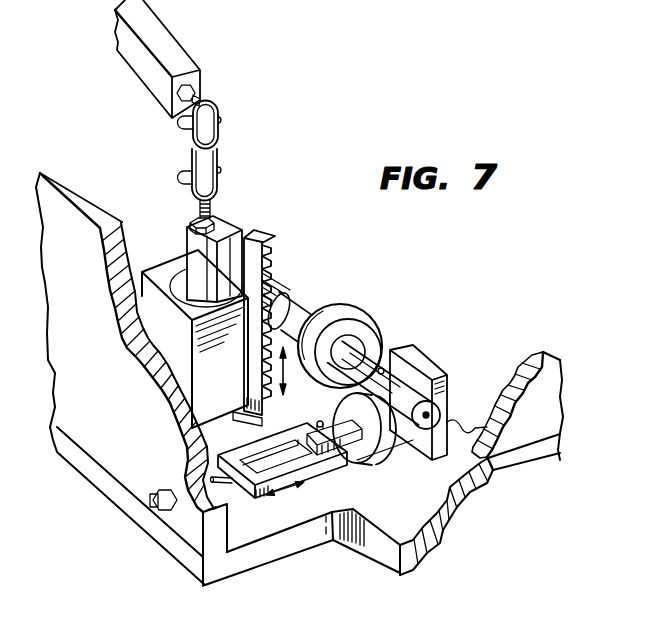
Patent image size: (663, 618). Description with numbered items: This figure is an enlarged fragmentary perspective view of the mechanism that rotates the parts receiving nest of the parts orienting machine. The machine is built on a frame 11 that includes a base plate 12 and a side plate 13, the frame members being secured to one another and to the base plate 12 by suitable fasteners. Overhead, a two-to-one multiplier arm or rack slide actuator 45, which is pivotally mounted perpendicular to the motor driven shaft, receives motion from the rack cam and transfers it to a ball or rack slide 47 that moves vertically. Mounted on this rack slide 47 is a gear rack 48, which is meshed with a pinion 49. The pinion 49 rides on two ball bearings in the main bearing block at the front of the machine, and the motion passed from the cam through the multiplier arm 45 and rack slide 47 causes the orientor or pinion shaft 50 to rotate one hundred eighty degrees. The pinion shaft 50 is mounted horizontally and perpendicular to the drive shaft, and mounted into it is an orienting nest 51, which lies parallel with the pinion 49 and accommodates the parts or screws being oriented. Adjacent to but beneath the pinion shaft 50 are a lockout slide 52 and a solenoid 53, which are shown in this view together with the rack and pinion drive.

The frame 11 is at (281, 552).
The base plate 12 is at (243, 528).
The side plate 13 is at (122, 452).
The multiplier arm 45 is at (172, 50).
The rack slide 47 is at (212, 186).
The gear rack 48 is at (274, 258).
The pinion 49 is at (282, 281).
The pinion shaft 50 is at (302, 306).
The orienting nest 51 is at (384, 371).
The lockout slide 52 is at (320, 471).
The solenoid 53 is at (400, 455).